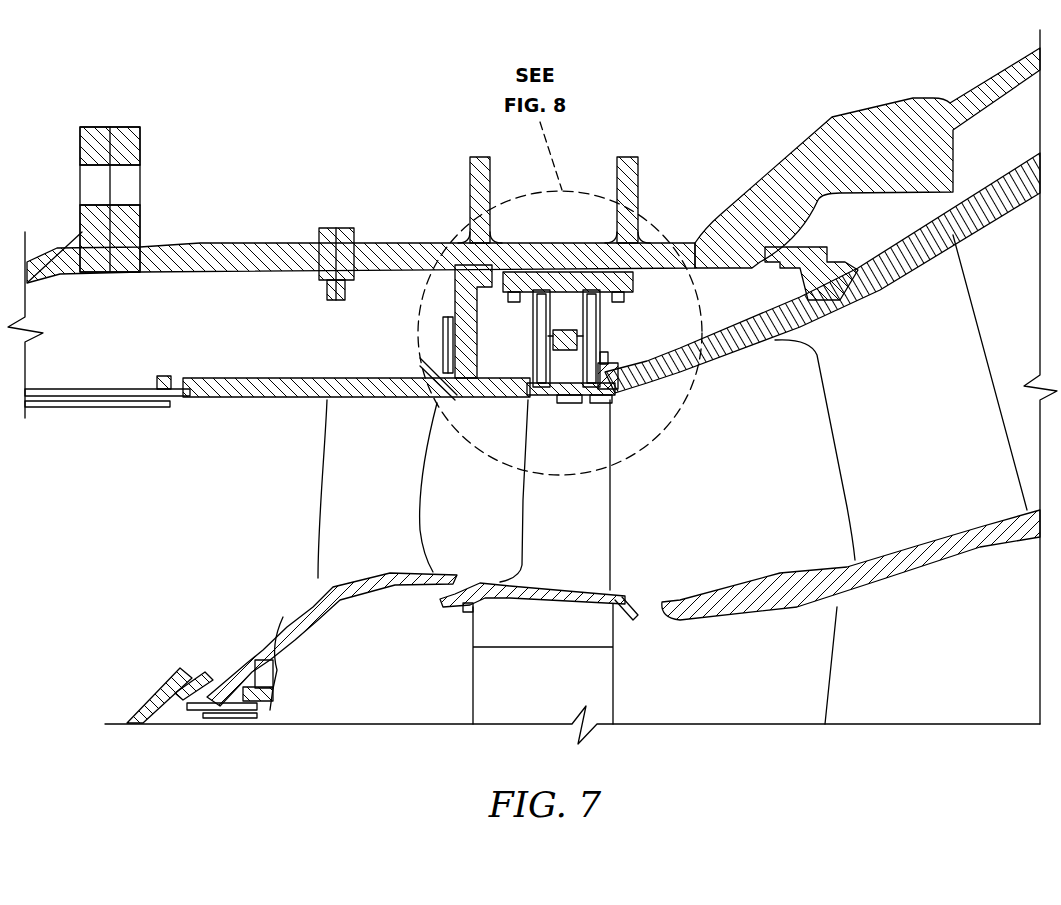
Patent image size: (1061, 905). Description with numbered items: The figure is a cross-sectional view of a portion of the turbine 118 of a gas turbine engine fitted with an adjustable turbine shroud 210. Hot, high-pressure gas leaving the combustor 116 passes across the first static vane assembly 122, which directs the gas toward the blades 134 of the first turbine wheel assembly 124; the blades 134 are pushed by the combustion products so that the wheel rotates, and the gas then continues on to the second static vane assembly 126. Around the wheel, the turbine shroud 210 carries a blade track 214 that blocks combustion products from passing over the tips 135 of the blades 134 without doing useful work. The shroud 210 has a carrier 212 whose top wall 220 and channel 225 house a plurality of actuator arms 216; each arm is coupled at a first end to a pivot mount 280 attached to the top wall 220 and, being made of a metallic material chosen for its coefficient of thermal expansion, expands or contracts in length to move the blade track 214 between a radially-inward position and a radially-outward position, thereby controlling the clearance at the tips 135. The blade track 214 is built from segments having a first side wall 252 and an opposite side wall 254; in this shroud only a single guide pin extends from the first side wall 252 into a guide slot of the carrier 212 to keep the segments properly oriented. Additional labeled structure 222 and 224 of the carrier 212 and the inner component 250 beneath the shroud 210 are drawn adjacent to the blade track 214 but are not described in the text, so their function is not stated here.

The combustor 116 is at (140, 632).
The turbine 118 is at (292, 330).
The first static vane assembly 122 is at (347, 517).
The first turbine wheel assembly 124 is at (500, 668).
The second static vane assembly 126 is at (877, 504).
The blades 134 is at (548, 540).
The tips 135 is at (568, 400).
The turbine shroud 210 is at (647, 292).
The carrier 212 is at (513, 297).
The blade track 214 is at (603, 388).
The actuator arms 216 is at (545, 328).
The top wall 220 is at (528, 330).
The pin 222 is at (606, 364).
The seal strip 224 is at (448, 338).
The channel 225 is at (573, 392).
The blade outer air seal 250 is at (548, 390).
The first side wall 252 is at (645, 378).
The side wall 254 is at (452, 372).
The pivot mount 280 is at (548, 310).